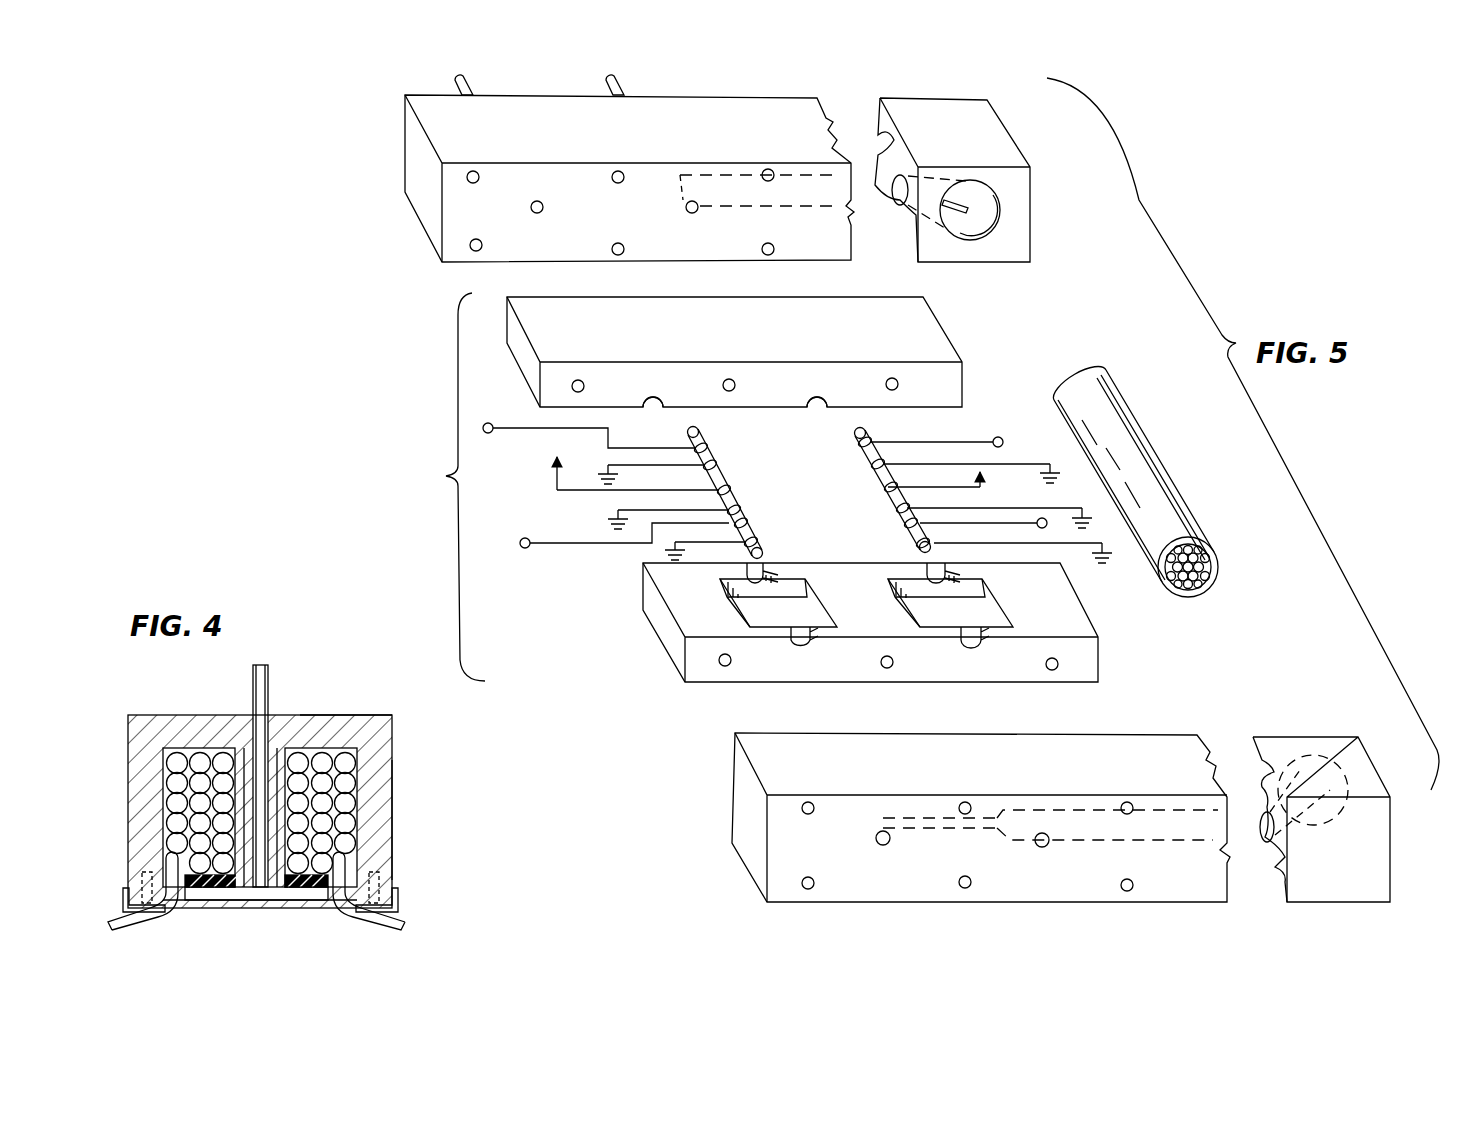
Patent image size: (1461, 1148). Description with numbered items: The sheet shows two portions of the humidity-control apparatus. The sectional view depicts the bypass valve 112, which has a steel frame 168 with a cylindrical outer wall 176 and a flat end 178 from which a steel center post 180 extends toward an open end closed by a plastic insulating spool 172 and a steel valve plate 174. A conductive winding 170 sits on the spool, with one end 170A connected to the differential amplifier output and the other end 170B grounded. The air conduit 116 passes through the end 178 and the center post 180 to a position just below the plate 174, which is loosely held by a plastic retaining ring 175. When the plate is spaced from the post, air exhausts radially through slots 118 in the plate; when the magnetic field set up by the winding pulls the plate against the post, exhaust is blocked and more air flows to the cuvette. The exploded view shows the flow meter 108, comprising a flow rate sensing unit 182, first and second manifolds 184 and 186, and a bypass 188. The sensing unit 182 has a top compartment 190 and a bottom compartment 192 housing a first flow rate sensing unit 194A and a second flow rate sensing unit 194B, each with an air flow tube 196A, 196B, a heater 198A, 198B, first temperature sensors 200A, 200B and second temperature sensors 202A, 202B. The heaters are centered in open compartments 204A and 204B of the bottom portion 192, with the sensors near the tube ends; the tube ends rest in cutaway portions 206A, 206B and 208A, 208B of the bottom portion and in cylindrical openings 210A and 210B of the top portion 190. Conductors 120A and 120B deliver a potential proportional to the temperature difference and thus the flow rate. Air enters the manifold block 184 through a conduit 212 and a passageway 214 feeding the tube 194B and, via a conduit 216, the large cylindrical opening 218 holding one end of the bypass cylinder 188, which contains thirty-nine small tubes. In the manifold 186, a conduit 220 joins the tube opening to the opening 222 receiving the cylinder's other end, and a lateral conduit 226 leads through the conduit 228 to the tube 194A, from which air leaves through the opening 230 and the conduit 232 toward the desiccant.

In FIG. 4, the bypass valve 112 is at (334, 667).
In FIG. 4, the air conduit 116 is at (253, 680).
In FIG. 4, the slots 118 is at (187, 905).
In FIG. 4, the steel frame 168 is at (393, 733).
In FIG. 4, the conductive winding 170 is at (343, 797).
In FIG. 4, the winding end 170A is at (157, 935).
In FIG. 4, the winding end 170B is at (375, 932).
In FIG. 4, the plastic insulating spool 172 is at (267, 901).
In FIG. 4, the steel valve plate 174 is at (242, 910).
In FIG. 4, the plastic retaining ring 175 is at (125, 900).
In FIG. 4, the cylindrical outer wall 176 is at (392, 813).
In FIG. 4, the flat end 178 is at (333, 716).
In FIG. 4, the steel center post 180 is at (252, 770).
In FIG. 5, the flow meter 108 is at (1231, 437).
In FIG. 5, the conductors 120A is at (514, 436).
In FIG. 5, the conductors 120B is at (978, 438).
In FIG. 5, the flow rate sensing unit 182 is at (445, 487).
In FIG. 5, the first manifold block 184 is at (393, 178).
In FIG. 5, the second manifold 186 is at (710, 752).
In FIG. 5, the bypass cylinder 188 is at (1126, 394).
In FIG. 5, the top compartment 190 is at (950, 345).
In FIG. 5, the bottom compartment 192 is at (1098, 637).
In FIG. 5, the first flow rate sensing unit 194A is at (727, 417).
In FIG. 5, the second flow rate sensing unit 194B is at (857, 427).
In FIG. 5, the air flow tube 196A is at (729, 482).
In FIG. 5, the air flow tube 196B is at (892, 512).
In FIG. 5, the heater 198A is at (741, 492).
In FIG. 5, the heater 198B is at (875, 493).
In FIG. 5, the first temperature sensor 200A is at (694, 449).
In FIG. 5, the first temperature sensor 200B is at (852, 446).
In FIG. 5, the second temperature sensor 202A is at (765, 540).
In FIG. 5, the second temperature sensor 202B is at (910, 545).
In FIG. 5, the open compartment 204A is at (753, 607).
In FIG. 5, the open compartment 204B is at (980, 613).
In FIG. 5, the cutaway portion 206A is at (792, 642).
In FIG. 5, the cutaway portion 206B is at (986, 642).
In FIG. 5, the cutaway portion 208A is at (751, 567).
In FIG. 5, the cutaway portion 208B is at (941, 564).
In FIG. 5, the cylindrical opening 210A is at (650, 405).
In FIG. 5, the cylindrical opening 210B is at (823, 415).
In FIG. 5, the conduit 212 is at (617, 86).
In FIG. 5, the passageway 214 is at (686, 207).
In FIG. 5, the conduit 216 is at (747, 207).
In FIG. 5, the large cylindrical opening 218 is at (975, 220).
In FIG. 5, the conduit 220 is at (1147, 842).
In FIG. 5, the opening 222 is at (1350, 815).
In FIG. 5, the lateral conduit 226 is at (970, 832).
In FIG. 5, the conduit 228 is at (876, 840).
In FIG. 5, the opening 230 is at (543, 207).
In FIG. 5, the conduit 232 is at (467, 83).